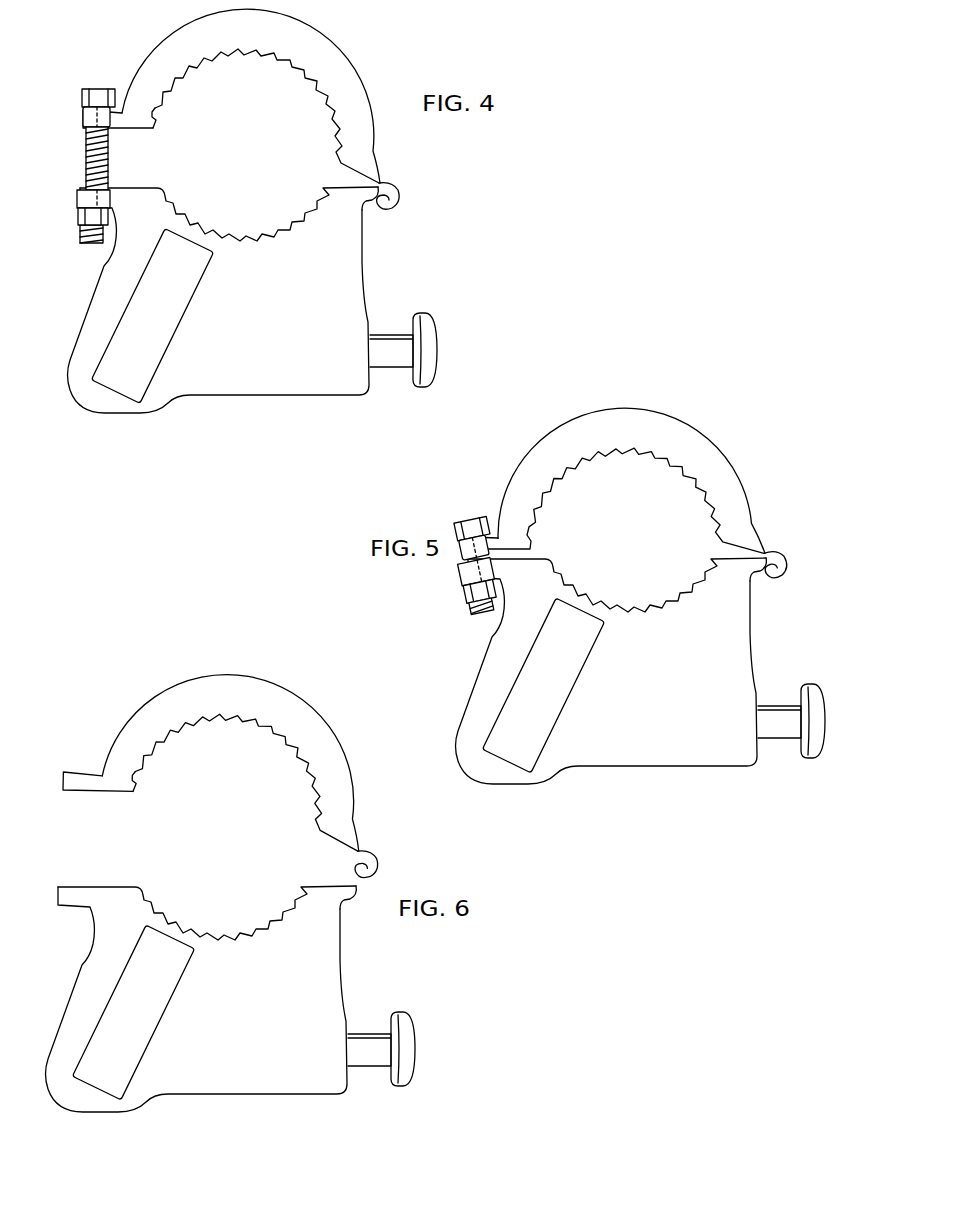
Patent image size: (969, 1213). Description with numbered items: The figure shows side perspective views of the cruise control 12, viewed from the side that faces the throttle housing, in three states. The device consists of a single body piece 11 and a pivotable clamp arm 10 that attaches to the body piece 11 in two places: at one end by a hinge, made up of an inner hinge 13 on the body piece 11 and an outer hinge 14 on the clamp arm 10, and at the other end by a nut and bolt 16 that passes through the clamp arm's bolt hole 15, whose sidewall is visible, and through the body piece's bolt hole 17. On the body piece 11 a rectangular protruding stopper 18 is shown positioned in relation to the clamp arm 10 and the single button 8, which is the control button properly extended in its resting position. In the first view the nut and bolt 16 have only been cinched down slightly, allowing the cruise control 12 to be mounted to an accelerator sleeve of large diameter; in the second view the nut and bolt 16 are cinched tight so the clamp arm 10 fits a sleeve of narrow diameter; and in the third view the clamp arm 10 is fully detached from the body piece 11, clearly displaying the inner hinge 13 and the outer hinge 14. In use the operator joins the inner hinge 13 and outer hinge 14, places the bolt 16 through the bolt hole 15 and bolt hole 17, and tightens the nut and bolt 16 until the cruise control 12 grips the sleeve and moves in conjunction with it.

In FIG. 4, the single button 8 is at (424, 340).
In FIG. 4, the pivotable clamp arm 10 is at (253, 109).
In FIG. 6, the pivotable clamp arm 10 is at (256, 748).
In FIG. 4, the single body piece 11 is at (241, 317).
In FIG. 6, the single body piece 11 is at (231, 992).
In FIG. 4, the cruise control 12 is at (430, 210).
In FIG. 5, the cruise control 12 is at (726, 390).
In FIG. 4, the inner hinge 13 is at (378, 193).
In FIG. 6, the inner hinge 13 is at (362, 900).
In FIG. 4, the outer hinge 14 is at (393, 190).
In FIG. 6, the outer hinge 14 is at (382, 856).
In FIG. 4, the bolt hole 15 is at (103, 115).
In FIG. 4, the nut and bolt 16 is at (88, 147).
In FIG. 5, the nut and bolt 16 is at (476, 523).
In FIG. 4, the bolt hole 17 is at (93, 196).
In FIG. 4, the stopper 18 is at (120, 378).